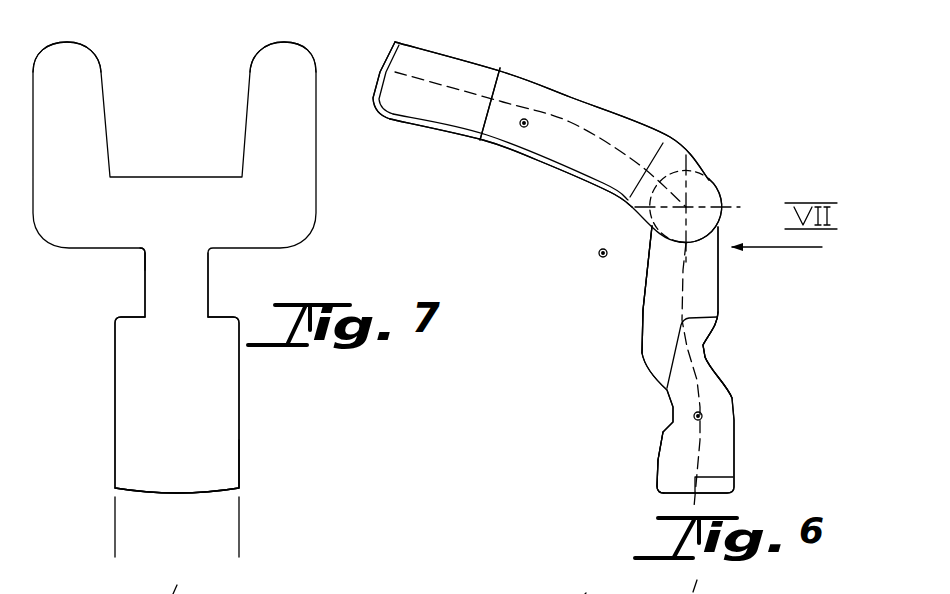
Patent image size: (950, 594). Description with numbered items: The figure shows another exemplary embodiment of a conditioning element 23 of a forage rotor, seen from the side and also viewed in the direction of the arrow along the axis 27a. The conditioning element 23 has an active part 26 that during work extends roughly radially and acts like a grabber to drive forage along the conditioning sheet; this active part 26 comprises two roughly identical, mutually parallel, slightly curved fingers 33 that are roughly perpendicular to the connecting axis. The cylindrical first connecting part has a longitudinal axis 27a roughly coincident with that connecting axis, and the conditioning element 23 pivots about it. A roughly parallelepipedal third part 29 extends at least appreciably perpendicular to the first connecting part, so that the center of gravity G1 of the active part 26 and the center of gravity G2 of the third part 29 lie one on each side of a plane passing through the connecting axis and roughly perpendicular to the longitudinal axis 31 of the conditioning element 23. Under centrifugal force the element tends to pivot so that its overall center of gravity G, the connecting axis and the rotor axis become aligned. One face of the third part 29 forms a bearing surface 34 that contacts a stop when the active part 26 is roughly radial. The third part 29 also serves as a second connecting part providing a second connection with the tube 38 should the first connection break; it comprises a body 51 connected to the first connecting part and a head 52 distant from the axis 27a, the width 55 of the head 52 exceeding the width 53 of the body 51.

In FIG. 7, the conditioning element 23 is at (318, 210).
In FIG. 6, the conditioning element 23 is at (733, 140).
In FIG. 6, the active part 26 is at (627, 107).
In FIG. 6, the longitudinal axis of the first connecting part 27a is at (690, 203).
In FIG. 7, the third part 29 is at (240, 393).
In FIG. 6, the third part 29 is at (736, 434).
In FIG. 6, the longitudinal axis of the conditioning element 31 is at (577, 125).
In FIG. 7, the fingers 33 is at (250, 70).
In FIG. 6, the fingers 33 is at (455, 55).
In FIG. 6, the bearing surface 34 is at (658, 458).
In FIG. 6, the tube 38 is at (585, 593).
In FIG. 7, the body 51 is at (145, 272).
In FIG. 6, the body 51 is at (641, 305).
In FIG. 7, the head 52 is at (239, 456).
In FIG. 6, the head 52 is at (725, 378).
In FIG. 7, the width of the body 53 is at (145, 301).
In FIG. 7, the width of the head 55 is at (115, 544).
In FIG. 6, the center of gravity of the conditioning element G is at (598, 258).
In FIG. 6, the center of gravity of the active part G1 is at (526, 130).
In FIG. 6, the center of gravity of the third part G2 is at (690, 417).